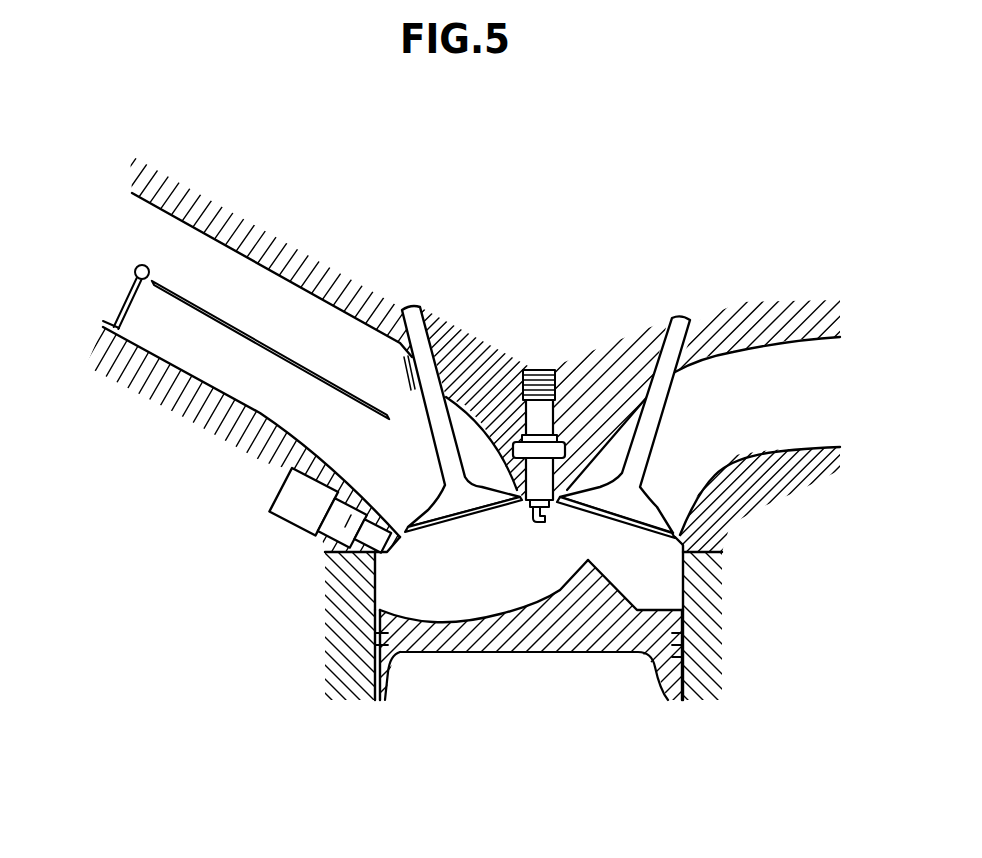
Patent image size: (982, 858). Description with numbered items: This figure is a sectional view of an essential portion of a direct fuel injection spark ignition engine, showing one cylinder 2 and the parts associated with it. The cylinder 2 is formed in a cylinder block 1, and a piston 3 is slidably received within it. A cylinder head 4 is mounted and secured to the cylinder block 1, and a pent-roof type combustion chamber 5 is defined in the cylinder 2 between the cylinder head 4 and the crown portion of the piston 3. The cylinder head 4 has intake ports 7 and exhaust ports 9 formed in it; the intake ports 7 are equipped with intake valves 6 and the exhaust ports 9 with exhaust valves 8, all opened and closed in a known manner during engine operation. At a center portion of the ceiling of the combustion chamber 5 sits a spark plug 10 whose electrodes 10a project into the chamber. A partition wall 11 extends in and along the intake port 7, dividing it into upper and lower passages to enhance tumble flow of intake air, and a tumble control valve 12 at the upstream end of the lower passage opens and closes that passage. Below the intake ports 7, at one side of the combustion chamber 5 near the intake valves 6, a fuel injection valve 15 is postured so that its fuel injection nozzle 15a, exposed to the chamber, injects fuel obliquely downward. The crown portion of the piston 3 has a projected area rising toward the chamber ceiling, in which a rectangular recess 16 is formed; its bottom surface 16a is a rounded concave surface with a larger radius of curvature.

The cylinder block 1 is at (695, 670).
The cylinder 2 is at (680, 598).
The piston 3 is at (529, 657).
The cylinder head 4 is at (695, 533).
The combustion chamber 5 is at (633, 565).
The intake valve 6 is at (427, 370).
The intake port 7 is at (233, 370).
The exhaust valve 8 is at (647, 442).
The exhaust port 9 is at (767, 440).
The spark plug 10 is at (559, 528).
The electrodes 10a is at (548, 514).
The partition wall 11 is at (217, 313).
The tumble control valve 12 is at (128, 303).
The fuel injection valve 15 is at (325, 565).
The fuel injection nozzle 15a is at (385, 550).
The rectangular recess 16 is at (543, 603).
The bottom surface 16a is at (472, 625).